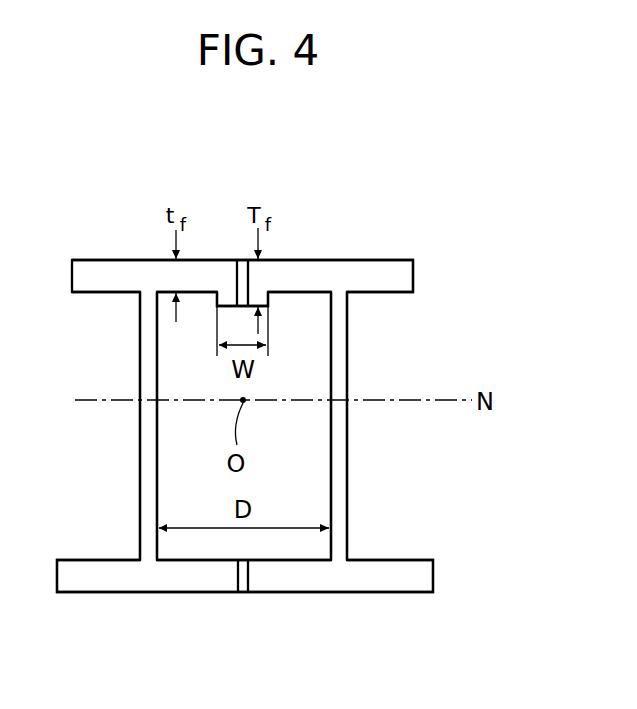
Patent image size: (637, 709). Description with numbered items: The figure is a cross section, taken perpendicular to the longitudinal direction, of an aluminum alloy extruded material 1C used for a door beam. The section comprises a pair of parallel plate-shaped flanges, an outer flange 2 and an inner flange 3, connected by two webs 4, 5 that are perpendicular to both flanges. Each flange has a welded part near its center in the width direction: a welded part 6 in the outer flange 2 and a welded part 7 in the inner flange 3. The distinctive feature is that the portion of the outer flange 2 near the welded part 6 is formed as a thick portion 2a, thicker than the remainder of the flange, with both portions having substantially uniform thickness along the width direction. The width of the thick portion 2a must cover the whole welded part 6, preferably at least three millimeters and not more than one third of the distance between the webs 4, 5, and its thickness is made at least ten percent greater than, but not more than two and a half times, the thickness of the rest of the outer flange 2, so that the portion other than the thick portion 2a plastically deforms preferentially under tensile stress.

The aluminum alloy extruded material 1C is at (368, 200).
The outer flange 2 is at (128, 246).
The thick portion 2a is at (228, 296).
The inner flange 3 is at (175, 582).
The web 4 is at (150, 427).
The web 5 is at (337, 427).
The welded part 6 is at (245, 284).
The welded part 7 is at (243, 580).